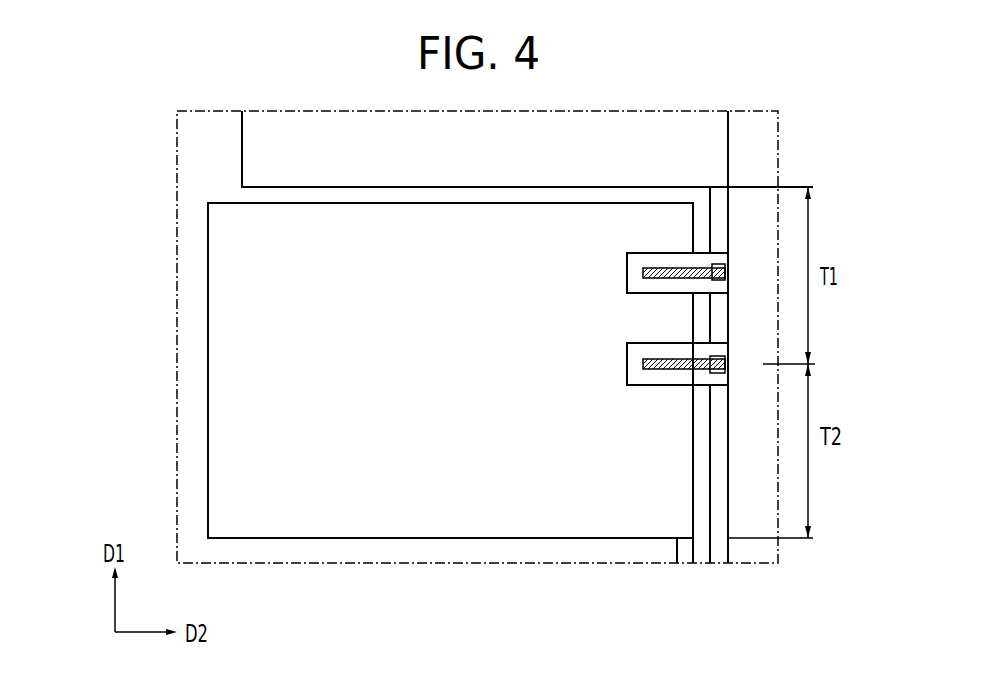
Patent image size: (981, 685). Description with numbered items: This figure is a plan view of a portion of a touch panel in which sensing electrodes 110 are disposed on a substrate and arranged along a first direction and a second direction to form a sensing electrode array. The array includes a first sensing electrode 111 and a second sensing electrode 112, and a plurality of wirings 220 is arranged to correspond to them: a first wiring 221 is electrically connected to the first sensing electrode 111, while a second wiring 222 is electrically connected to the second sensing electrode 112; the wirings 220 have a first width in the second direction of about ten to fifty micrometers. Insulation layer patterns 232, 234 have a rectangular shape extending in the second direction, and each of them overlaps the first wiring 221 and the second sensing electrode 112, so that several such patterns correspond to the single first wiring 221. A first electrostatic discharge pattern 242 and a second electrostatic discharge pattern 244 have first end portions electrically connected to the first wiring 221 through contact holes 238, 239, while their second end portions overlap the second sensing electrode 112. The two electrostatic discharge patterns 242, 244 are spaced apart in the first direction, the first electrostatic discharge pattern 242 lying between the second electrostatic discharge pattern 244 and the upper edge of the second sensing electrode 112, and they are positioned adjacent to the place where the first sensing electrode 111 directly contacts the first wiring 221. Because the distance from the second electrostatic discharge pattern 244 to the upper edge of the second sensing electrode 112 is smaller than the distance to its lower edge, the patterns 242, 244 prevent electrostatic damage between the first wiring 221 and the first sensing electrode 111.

The sensing electrodes 110 is at (113, 143).
The first sensing electrode 111 is at (253, 152).
The second sensing electrode 112 is at (221, 255).
The wirings 220 is at (745, 625).
The first wiring 221 is at (719, 556).
The second wiring 222 is at (685, 556).
The first insulation layer pattern 232 is at (628, 254).
The second insulation layer pattern 234 is at (628, 344).
The first contact hole 238 is at (720, 263).
The second contact hole 239 is at (717, 348).
The first electrostatic discharge pattern 242 is at (645, 273).
The second electrostatic discharge pattern 244 is at (645, 364).